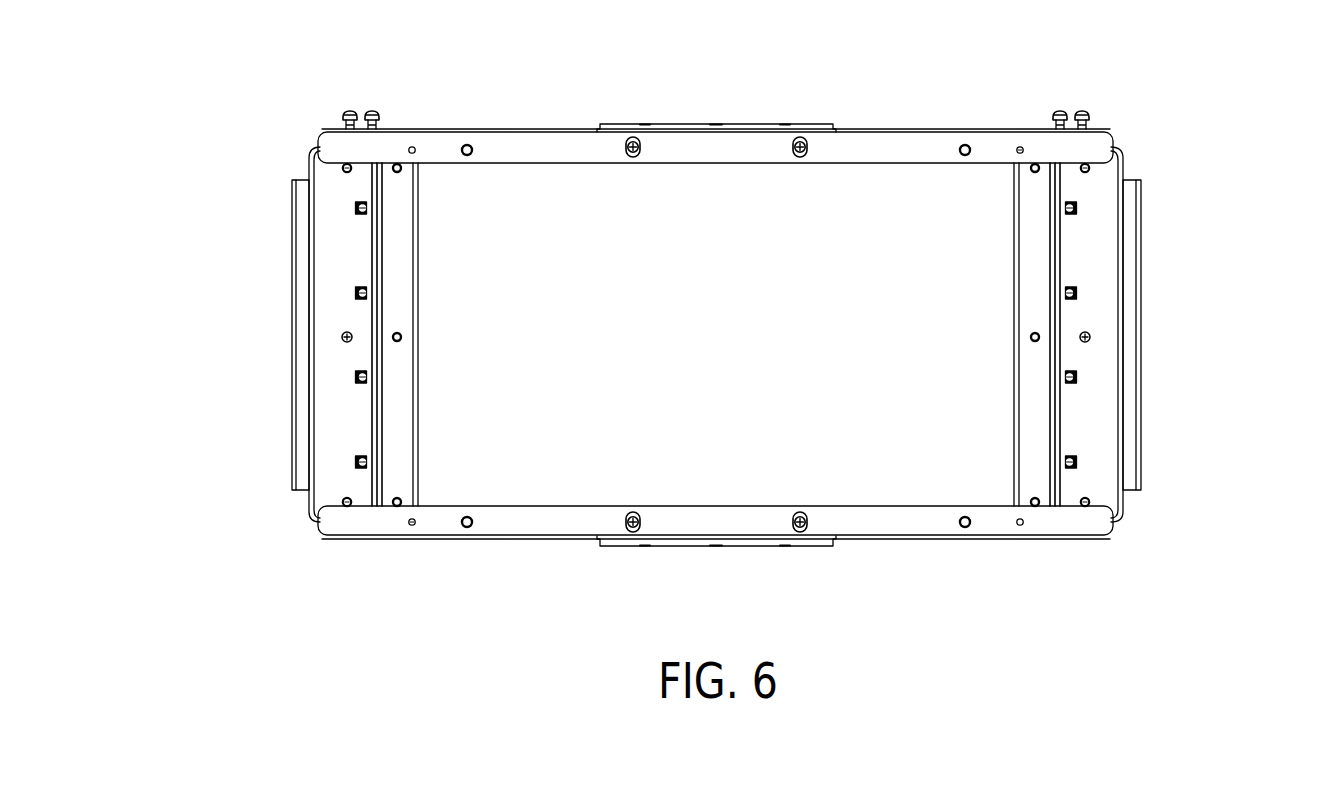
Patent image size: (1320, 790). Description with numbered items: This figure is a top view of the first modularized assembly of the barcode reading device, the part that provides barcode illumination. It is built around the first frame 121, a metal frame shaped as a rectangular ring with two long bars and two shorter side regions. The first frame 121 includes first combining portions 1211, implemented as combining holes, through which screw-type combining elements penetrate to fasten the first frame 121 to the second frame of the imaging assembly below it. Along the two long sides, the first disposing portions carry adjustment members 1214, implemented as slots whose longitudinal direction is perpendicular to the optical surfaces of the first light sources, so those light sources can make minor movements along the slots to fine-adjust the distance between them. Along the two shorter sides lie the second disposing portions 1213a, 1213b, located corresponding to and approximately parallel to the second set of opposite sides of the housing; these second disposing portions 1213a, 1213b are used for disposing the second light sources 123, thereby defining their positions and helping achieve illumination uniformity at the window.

The first frame 121 is at (1125, 150).
The first combining portions 1211 is at (397, 337).
The second disposing portion 1213a is at (342, 357).
The second disposing portion 1213b is at (1095, 390).
The adjustment members 1214 is at (800, 147).
The second light source 123 is at (360, 293).